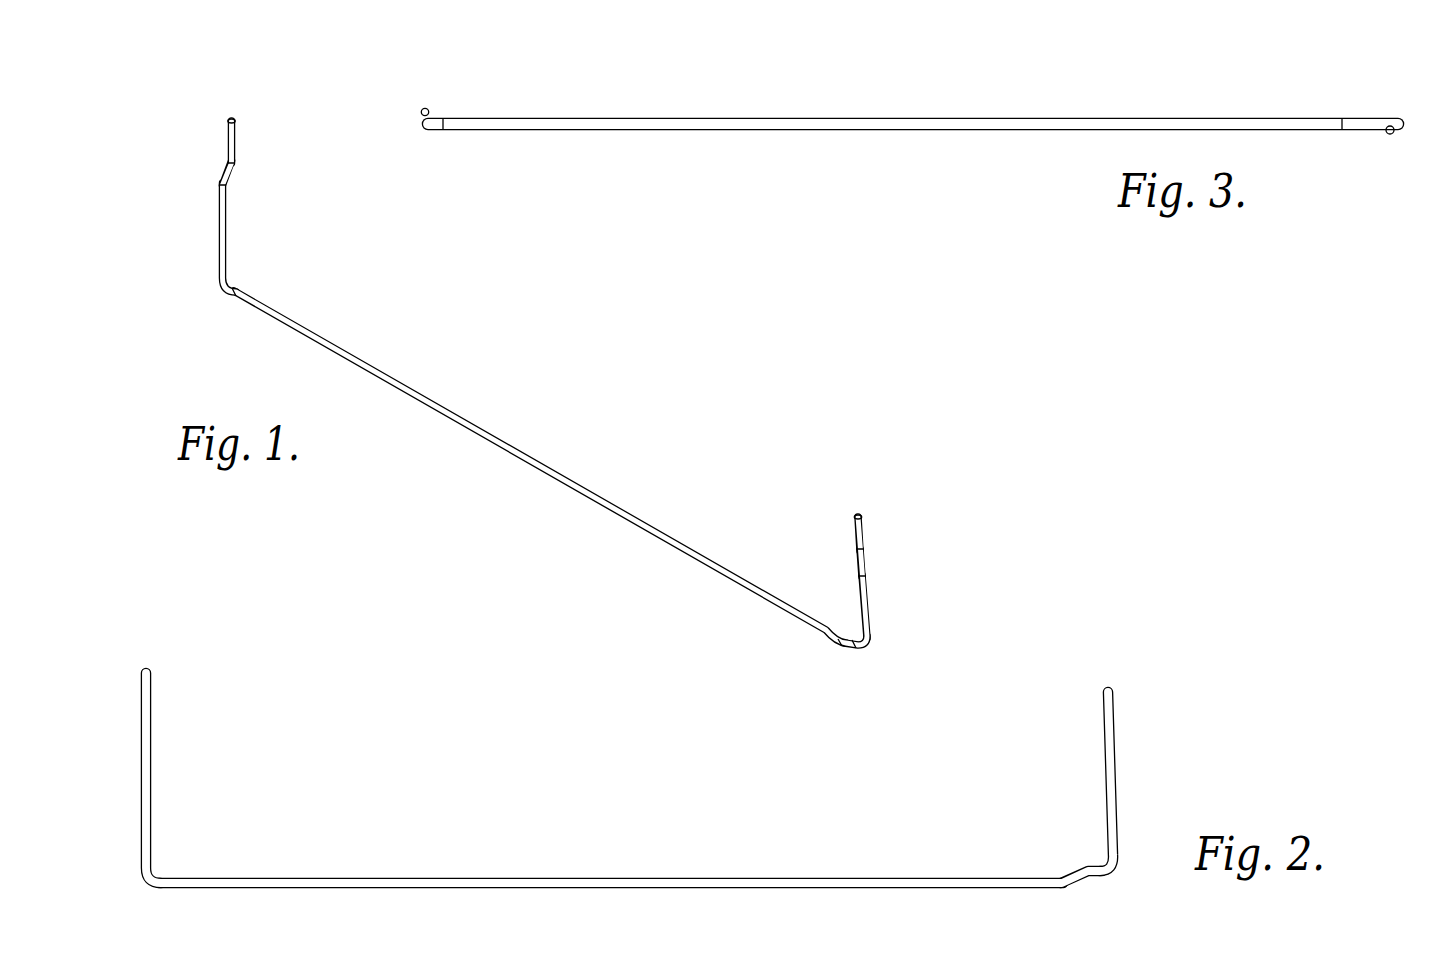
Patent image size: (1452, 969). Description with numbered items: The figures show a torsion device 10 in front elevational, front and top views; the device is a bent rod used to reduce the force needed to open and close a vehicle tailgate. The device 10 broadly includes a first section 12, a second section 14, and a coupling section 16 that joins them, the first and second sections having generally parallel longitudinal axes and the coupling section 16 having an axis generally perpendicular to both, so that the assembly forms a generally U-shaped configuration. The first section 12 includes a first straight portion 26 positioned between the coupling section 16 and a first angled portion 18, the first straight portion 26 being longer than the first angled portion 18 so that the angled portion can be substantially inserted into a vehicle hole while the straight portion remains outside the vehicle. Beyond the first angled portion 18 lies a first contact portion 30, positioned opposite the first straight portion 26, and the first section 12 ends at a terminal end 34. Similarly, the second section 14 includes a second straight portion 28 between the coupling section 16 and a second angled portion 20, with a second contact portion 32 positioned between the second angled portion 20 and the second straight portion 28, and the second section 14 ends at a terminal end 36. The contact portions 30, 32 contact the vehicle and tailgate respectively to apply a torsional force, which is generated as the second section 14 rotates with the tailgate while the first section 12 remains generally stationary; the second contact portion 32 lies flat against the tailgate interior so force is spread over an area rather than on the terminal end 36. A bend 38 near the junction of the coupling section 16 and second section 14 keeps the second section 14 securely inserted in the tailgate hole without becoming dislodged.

In FIG. 1, the torsion device 10 is at (872, 443).
In FIG. 3, the torsion device 10 is at (942, 183).
In FIG. 2, the torsion device 10 is at (549, 797).
In FIG. 1, the first section 12 is at (185, 170).
In FIG. 3, the first section 12 is at (404, 102).
In FIG. 2, the first section 12 is at (172, 763).
In FIG. 1, the second section 14 is at (912, 629).
In FIG. 3, the second section 14 is at (1358, 104).
In FIG. 2, the second section 14 is at (1152, 727).
In FIG. 1, the coupling section 16 is at (618, 515).
In FIG. 3, the coupling section 16 is at (836, 121).
In FIG. 2, the coupling section 16 is at (696, 880).
In FIG. 1, the first angled portion 18 is at (230, 176).
In FIG. 1, the second angled portion 20 is at (866, 542).
In FIG. 1, the first straight portion 26 is at (226, 241).
In FIG. 1, the second straight portion 28 is at (870, 593).
In FIG. 1, the first contact portion 30 is at (236, 148).
In FIG. 1, the second contact portion 32 is at (862, 561).
In FIG. 1, the terminal end 34 is at (229, 118).
In FIG. 3, the terminal end 34 is at (429, 111).
In FIG. 1, the terminal end 36 is at (856, 514).
In FIG. 3, the terminal end 36 is at (1388, 135).
In FIG. 1, the bend 38 is at (852, 647).
In FIG. 2, the bend 38 is at (1095, 877).